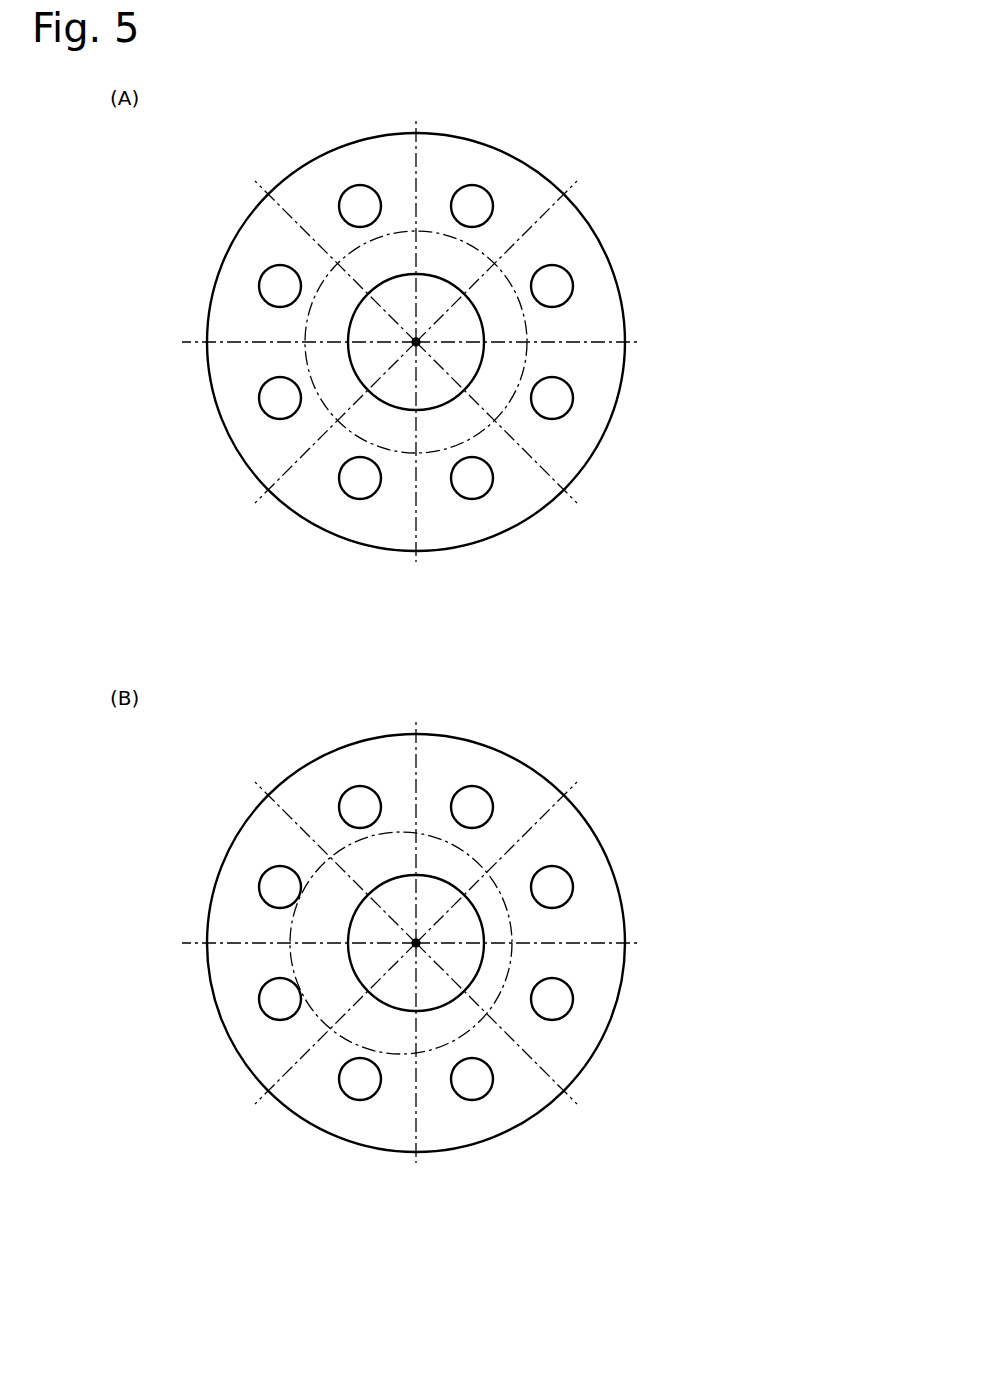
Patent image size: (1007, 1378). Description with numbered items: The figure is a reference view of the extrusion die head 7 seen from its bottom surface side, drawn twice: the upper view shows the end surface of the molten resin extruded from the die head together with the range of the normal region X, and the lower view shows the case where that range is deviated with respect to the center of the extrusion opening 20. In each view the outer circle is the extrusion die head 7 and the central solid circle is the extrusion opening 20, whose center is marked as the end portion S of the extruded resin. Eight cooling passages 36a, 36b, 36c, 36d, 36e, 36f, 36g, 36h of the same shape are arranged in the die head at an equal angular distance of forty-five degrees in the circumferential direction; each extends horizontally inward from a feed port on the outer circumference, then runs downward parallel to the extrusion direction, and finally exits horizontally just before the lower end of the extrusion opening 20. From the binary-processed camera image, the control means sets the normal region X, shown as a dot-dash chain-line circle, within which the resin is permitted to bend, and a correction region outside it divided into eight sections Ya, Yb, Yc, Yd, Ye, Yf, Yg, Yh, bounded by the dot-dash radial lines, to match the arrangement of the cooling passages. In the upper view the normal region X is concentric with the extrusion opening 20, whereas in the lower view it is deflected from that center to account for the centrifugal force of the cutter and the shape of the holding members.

The extrusion die head 7 is at (599, 137).
The extrusion opening 20 is at (464, 294).
The normal region X is at (305, 333).
The cooling passage 36a is at (361, 499).
The cooling passage 36b is at (474, 499).
The cooling passage 36c is at (573, 398).
The cooling passage 36d is at (569, 275).
The cooling passage 36e is at (481, 186).
The cooling passage 36f is at (353, 186).
The cooling passage 36g is at (260, 277).
The cooling passage 36h is at (268, 416).
The correction region Ya is at (535, 194).
The correction region Yb is at (388, 166).
The correction region Yc is at (267, 227).
The correction region Yd is at (228, 392).
The correction region Ye is at (295, 495).
The correction region Yf is at (443, 535).
The correction region Yg is at (573, 445).
The correction region Yh is at (603, 313).